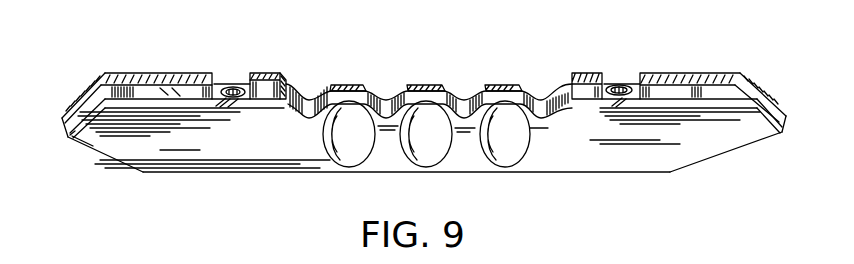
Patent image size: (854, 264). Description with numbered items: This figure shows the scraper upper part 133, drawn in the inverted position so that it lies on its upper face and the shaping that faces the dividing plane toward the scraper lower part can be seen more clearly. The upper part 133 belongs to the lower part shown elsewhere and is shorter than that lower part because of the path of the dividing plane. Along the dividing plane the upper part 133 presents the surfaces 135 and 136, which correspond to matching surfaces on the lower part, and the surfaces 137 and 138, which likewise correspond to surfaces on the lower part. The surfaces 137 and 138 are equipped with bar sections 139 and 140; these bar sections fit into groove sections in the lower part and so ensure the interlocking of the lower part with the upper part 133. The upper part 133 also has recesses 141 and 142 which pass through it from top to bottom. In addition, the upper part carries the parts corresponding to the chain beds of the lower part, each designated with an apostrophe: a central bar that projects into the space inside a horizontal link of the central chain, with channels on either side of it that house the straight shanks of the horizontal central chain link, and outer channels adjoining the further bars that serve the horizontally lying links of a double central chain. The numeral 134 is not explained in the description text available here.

The base plate 134 is at (311, 179).
The surface 135 is at (167, 104).
The surface 136 is at (690, 106).
The surface 137 is at (96, 135).
The surface 138 is at (770, 115).
The bar section 139 is at (145, 78).
The bar section 140 is at (700, 80).
The recess 141 is at (232, 90).
The recess 142 is at (622, 87).
The scraper upper part 133 is at (254, 60).